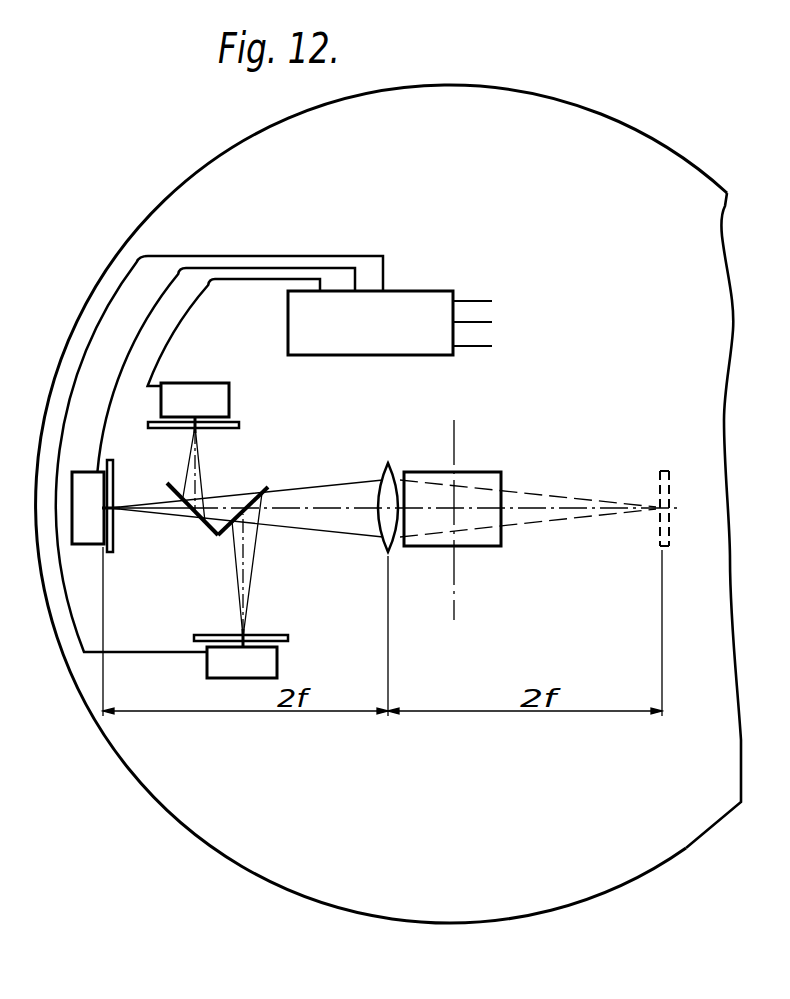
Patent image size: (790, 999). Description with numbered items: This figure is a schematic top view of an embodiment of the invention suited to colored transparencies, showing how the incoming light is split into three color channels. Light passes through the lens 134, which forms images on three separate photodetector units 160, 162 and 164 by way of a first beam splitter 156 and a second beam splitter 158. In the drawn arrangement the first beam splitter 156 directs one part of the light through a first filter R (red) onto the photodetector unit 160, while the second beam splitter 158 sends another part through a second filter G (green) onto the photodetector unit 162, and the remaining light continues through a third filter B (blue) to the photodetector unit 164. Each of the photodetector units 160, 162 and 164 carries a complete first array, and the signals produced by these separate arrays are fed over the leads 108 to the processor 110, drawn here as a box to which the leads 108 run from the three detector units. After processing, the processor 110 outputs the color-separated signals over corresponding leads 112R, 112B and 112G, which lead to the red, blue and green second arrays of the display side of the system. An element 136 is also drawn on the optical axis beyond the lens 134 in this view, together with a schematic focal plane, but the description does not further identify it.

The leads 108 is at (130, 356).
The processor 110 is at (387, 338).
The lead 112R is at (485, 302).
The lead 112B is at (487, 322).
The lead 112G is at (490, 347).
The lens 134 is at (385, 470).
The light modulator 136 is at (495, 477).
The first beam splitter 156 is at (264, 487).
The second beam splitter 158 is at (208, 522).
The photodetector unit 160 is at (263, 670).
The photodetector unit 162 is at (215, 410).
The photodetector unit 164 is at (86, 523).
The third filter B is at (113, 465).
The second filter G is at (227, 424).
The first filter R is at (277, 637).